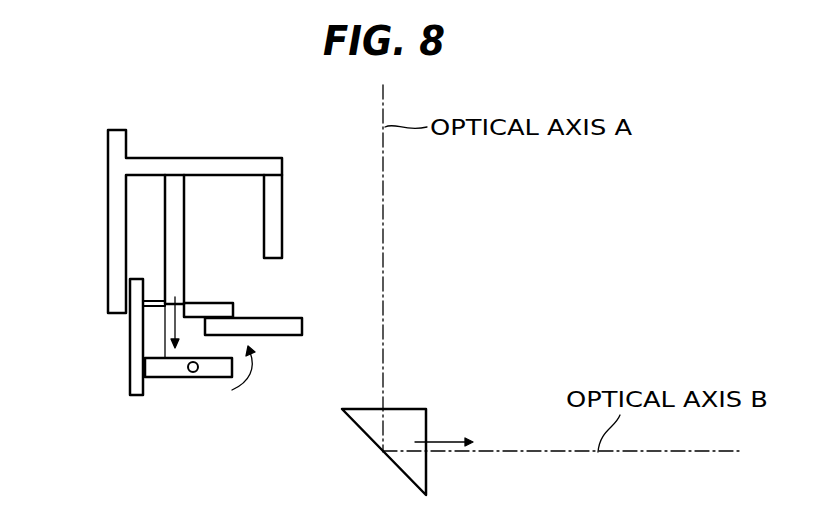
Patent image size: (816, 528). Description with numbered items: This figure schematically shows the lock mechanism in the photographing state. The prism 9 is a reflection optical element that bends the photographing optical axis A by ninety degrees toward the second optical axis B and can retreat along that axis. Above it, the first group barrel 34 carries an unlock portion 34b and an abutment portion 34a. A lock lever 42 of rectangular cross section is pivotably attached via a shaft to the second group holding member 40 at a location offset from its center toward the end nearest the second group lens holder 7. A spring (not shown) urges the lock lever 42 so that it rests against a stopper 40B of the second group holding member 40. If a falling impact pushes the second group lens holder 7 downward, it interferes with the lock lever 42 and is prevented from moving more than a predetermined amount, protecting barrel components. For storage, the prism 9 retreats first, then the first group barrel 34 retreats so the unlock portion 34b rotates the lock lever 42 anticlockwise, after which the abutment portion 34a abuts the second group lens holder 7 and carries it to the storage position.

The first group barrel 34 is at (112, 200).
The unlock portion 34b is at (165, 245).
The abutment portion 34a is at (273, 258).
The second group lens holder 7 is at (265, 320).
The second group holding member 40 is at (138, 332).
The stopper 40B is at (157, 348).
The lock lever 42 is at (168, 378).
The prism 9 is at (372, 440).